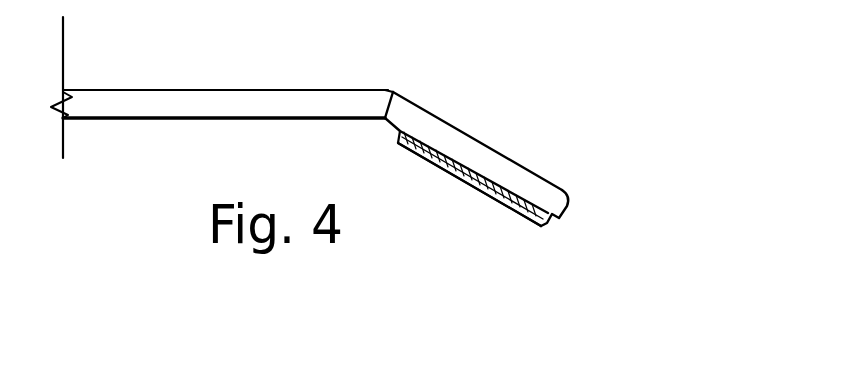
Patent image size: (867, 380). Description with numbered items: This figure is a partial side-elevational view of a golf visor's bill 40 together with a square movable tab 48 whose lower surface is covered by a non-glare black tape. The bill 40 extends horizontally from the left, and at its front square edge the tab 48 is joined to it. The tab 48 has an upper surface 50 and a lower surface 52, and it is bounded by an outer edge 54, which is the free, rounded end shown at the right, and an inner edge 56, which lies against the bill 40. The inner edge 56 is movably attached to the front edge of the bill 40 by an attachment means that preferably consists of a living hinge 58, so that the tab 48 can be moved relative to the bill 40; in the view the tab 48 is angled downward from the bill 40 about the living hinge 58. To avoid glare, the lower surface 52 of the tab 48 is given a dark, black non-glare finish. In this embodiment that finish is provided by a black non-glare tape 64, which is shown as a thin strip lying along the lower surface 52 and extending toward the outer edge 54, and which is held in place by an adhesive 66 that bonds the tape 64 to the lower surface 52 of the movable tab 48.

The bill 40 is at (184, 103).
The square movable tab 48 is at (439, 132).
The upper surface 50 is at (492, 148).
The lower surface 52 is at (525, 191).
The outer edge 54 is at (568, 208).
The inner edge 56 is at (392, 93).
The living hinge 58 is at (389, 90).
The black non-glare tape 64 is at (475, 186).
The adhesive 66 is at (427, 158).